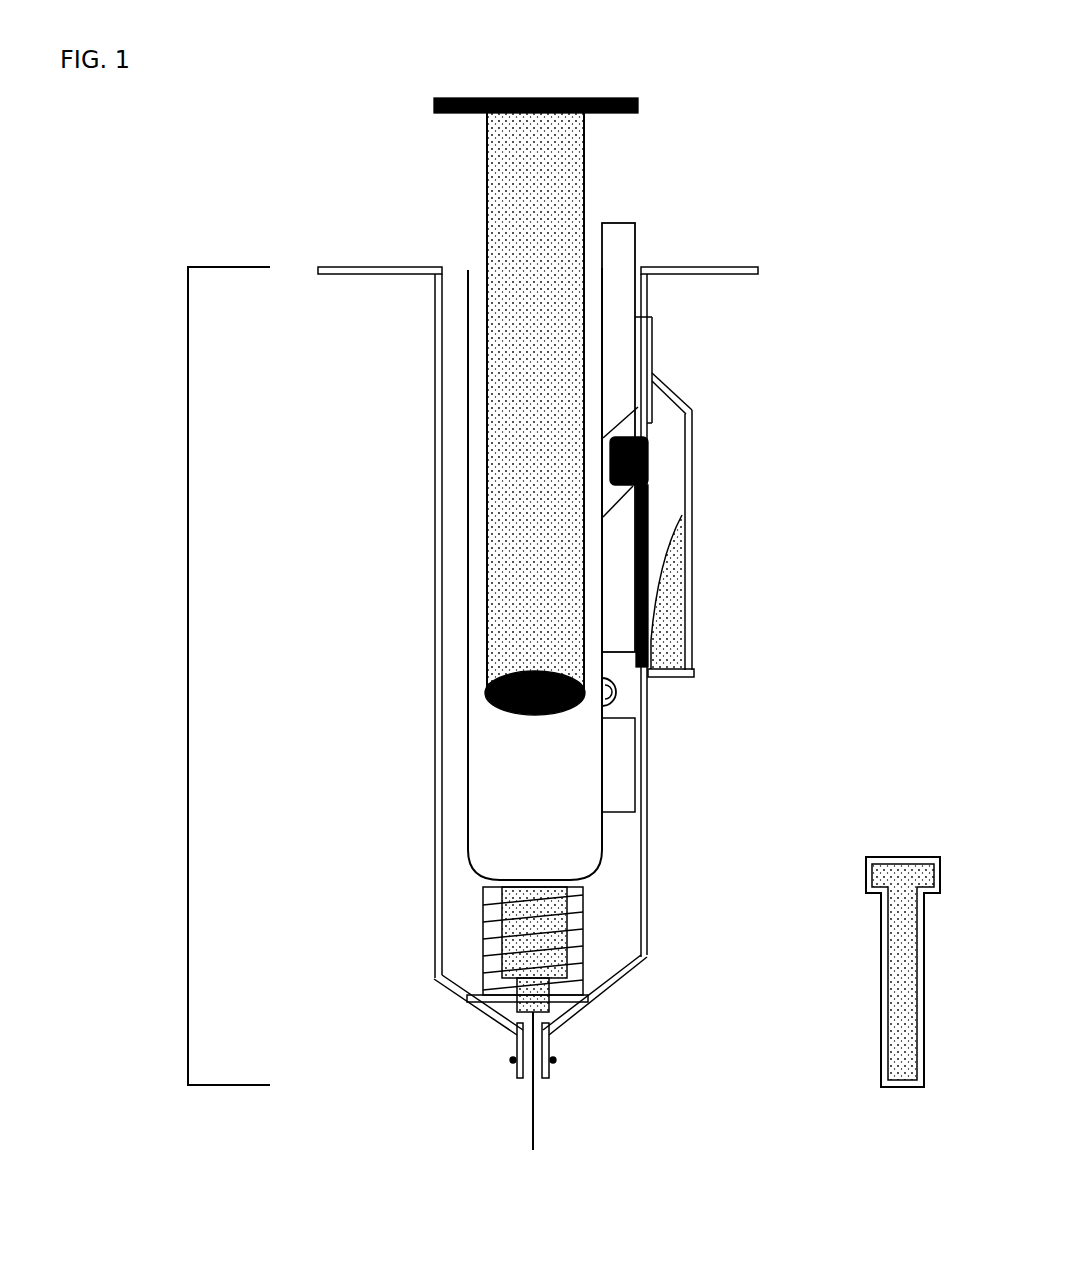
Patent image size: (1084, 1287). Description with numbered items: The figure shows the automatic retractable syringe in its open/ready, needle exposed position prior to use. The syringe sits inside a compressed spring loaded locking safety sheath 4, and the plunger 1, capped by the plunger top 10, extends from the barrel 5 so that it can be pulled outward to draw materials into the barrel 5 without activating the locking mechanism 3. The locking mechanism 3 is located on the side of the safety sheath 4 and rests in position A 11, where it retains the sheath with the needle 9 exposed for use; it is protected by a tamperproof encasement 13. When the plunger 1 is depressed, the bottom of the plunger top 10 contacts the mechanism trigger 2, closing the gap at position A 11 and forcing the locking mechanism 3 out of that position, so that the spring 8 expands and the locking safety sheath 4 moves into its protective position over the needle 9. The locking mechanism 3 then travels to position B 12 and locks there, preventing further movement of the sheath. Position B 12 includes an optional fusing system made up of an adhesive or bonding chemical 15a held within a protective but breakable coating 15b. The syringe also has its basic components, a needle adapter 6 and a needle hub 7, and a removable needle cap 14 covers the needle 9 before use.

The plunger 1 is at (485, 177).
The mechanism trigger 2 is at (641, 236).
The locking mechanism 3 is at (655, 468).
The locking safety sheath 4 is at (188, 640).
The barrel 5 is at (605, 841).
The needle adapter 6 is at (500, 903).
The needle hub 7 is at (552, 1010).
The spring 8 is at (481, 964).
The needle 9 is at (536, 1103).
The plunger top 10 is at (561, 96).
The position A 11 is at (630, 432).
The position B 12 is at (621, 676).
The tamperproof encasement 13 is at (699, 565).
The needle cap 14 is at (879, 935).
The adhesive or bonding chemical 15a is at (626, 689).
The protective coating 15b is at (617, 705).